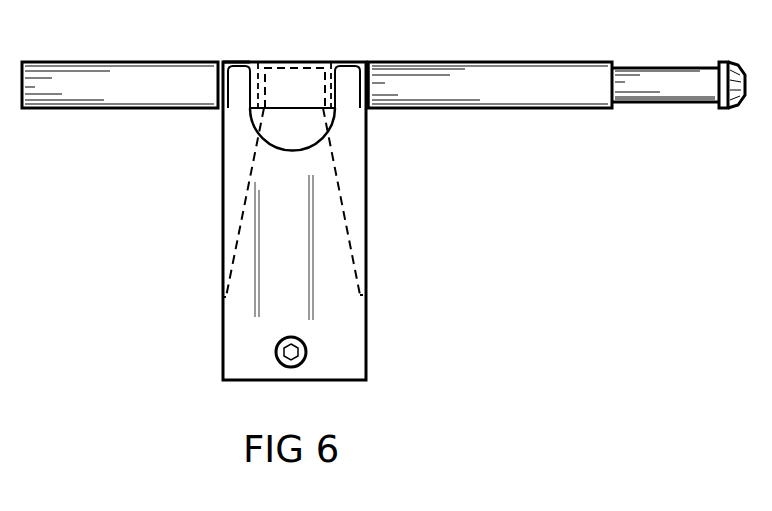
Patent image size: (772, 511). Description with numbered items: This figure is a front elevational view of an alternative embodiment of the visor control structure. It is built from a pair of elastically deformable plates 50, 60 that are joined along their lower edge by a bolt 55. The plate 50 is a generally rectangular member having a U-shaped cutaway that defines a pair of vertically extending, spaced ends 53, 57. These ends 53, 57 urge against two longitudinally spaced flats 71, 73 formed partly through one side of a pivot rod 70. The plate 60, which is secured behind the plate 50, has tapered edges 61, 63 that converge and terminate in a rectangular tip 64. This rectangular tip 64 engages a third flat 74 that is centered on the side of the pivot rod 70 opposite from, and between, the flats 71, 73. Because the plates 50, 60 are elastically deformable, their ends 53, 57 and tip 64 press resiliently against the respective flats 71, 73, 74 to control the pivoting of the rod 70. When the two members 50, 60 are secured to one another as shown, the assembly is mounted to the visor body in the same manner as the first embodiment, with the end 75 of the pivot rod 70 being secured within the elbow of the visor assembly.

The elastically deformable plate 50 is at (366, 173).
The vertically extending end 53 is at (233, 78).
The bolt 55 is at (307, 348).
The vertically extending end 57 is at (373, 62).
The elastically deformable plate 60 is at (350, 247).
The tapered edge 61 is at (245, 216).
The tapered edge 63 is at (340, 205).
The rectangular tip 64 is at (285, 68).
The pivot rod 70 is at (455, 68).
The flat 71 is at (237, 62).
The flat 73 is at (353, 83).
The flat 74 is at (302, 68).
The end of pivot rod 75 is at (665, 67).